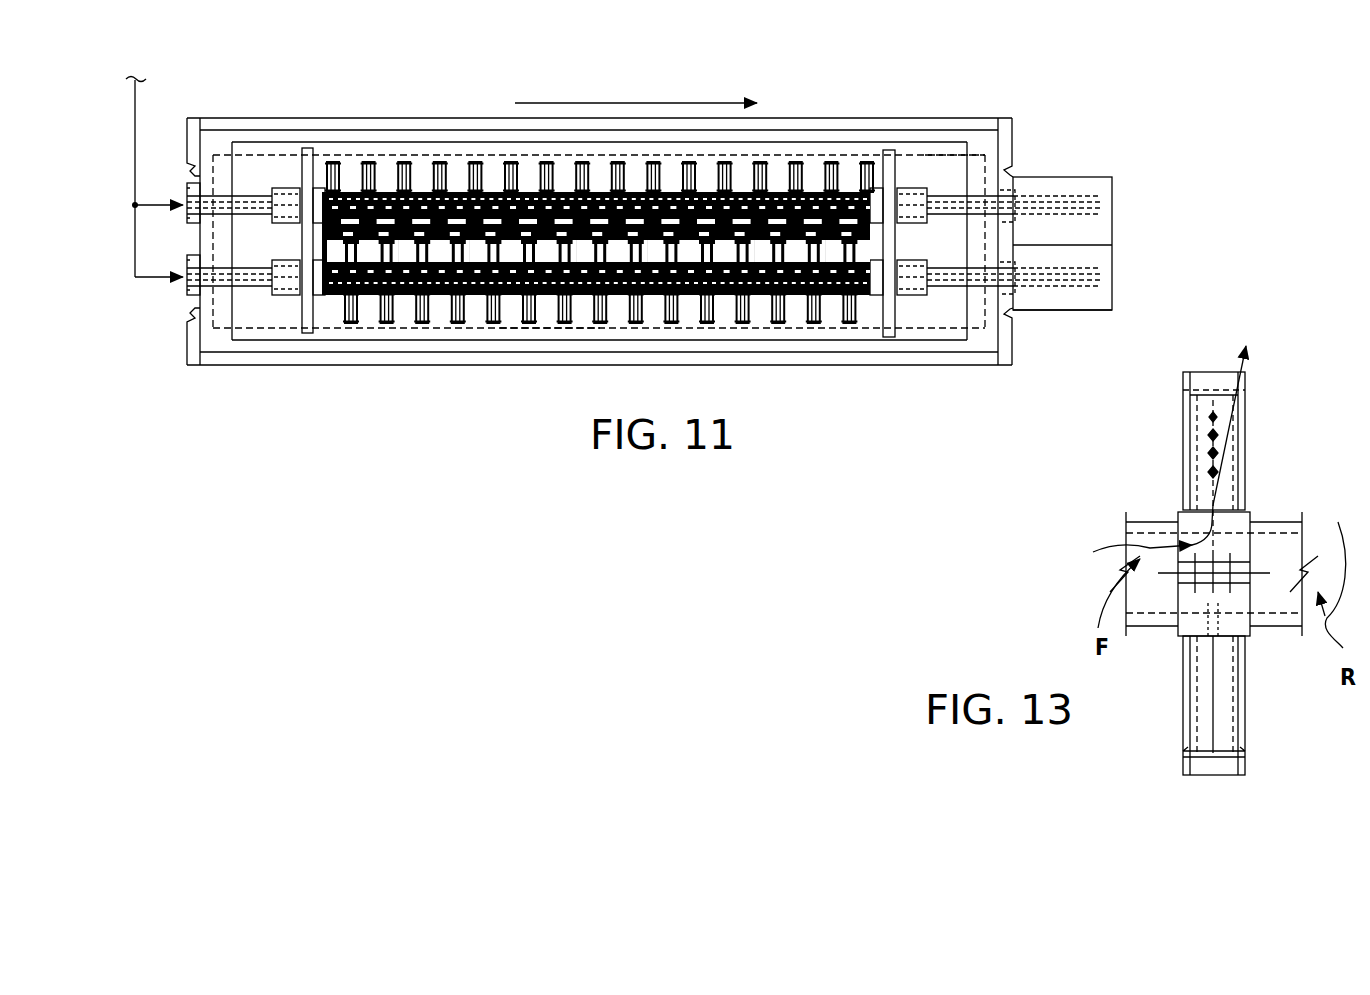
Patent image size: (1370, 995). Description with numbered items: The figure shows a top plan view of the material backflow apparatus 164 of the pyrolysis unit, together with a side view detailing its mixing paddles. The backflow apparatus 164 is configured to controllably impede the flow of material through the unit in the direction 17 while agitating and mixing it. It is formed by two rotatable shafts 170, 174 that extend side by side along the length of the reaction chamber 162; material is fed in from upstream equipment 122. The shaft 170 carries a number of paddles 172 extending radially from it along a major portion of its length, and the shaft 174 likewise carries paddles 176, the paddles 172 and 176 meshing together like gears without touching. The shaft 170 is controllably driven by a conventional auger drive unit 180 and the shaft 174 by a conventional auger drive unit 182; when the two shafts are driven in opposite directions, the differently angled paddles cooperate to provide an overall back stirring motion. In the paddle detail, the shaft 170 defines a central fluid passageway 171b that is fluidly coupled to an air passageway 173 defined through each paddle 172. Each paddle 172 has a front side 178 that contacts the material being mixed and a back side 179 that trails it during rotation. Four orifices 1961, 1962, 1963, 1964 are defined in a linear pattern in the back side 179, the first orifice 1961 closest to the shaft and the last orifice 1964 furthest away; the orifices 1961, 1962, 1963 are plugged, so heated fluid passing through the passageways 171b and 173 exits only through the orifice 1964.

In FIG. 11, the feed source 122 is at (147, 152).
In FIG. 11, the direction 17 is at (616, 103).
In FIG. 11, the reaction chamber 162 is at (932, 159).
In FIG. 11, the material backflow apparatus 164 is at (548, 332).
In FIG. 11, the shaft 170 is at (243, 287).
In FIG. 13, the shaft 170 is at (1278, 522).
In FIG. 13, the fluid passageway 171b is at (1282, 612).
In FIG. 11, the paddles 172 is at (422, 322).
In FIG. 13, the paddles 172 is at (1212, 372).
In FIG. 13, the air passageways 173 is at (1190, 492).
In FIG. 11, the shaft 174 is at (243, 195).
In FIG. 11, the paddles 176 is at (440, 161).
In FIG. 13, the front side 178 is at (1222, 702).
In FIG. 13, the back side 179 is at (1200, 395).
In FIG. 11, the auger drive unit 180 is at (1055, 310).
In FIG. 11, the auger drive unit 182 is at (1063, 177).
In FIG. 13, the first orifice 1961 is at (1215, 472).
In FIG. 13, the second orifice 1962 is at (1215, 453).
In FIG. 13, the third orifice 1963 is at (1210, 435).
In FIG. 13, the last orifice 1964 is at (1216, 416).